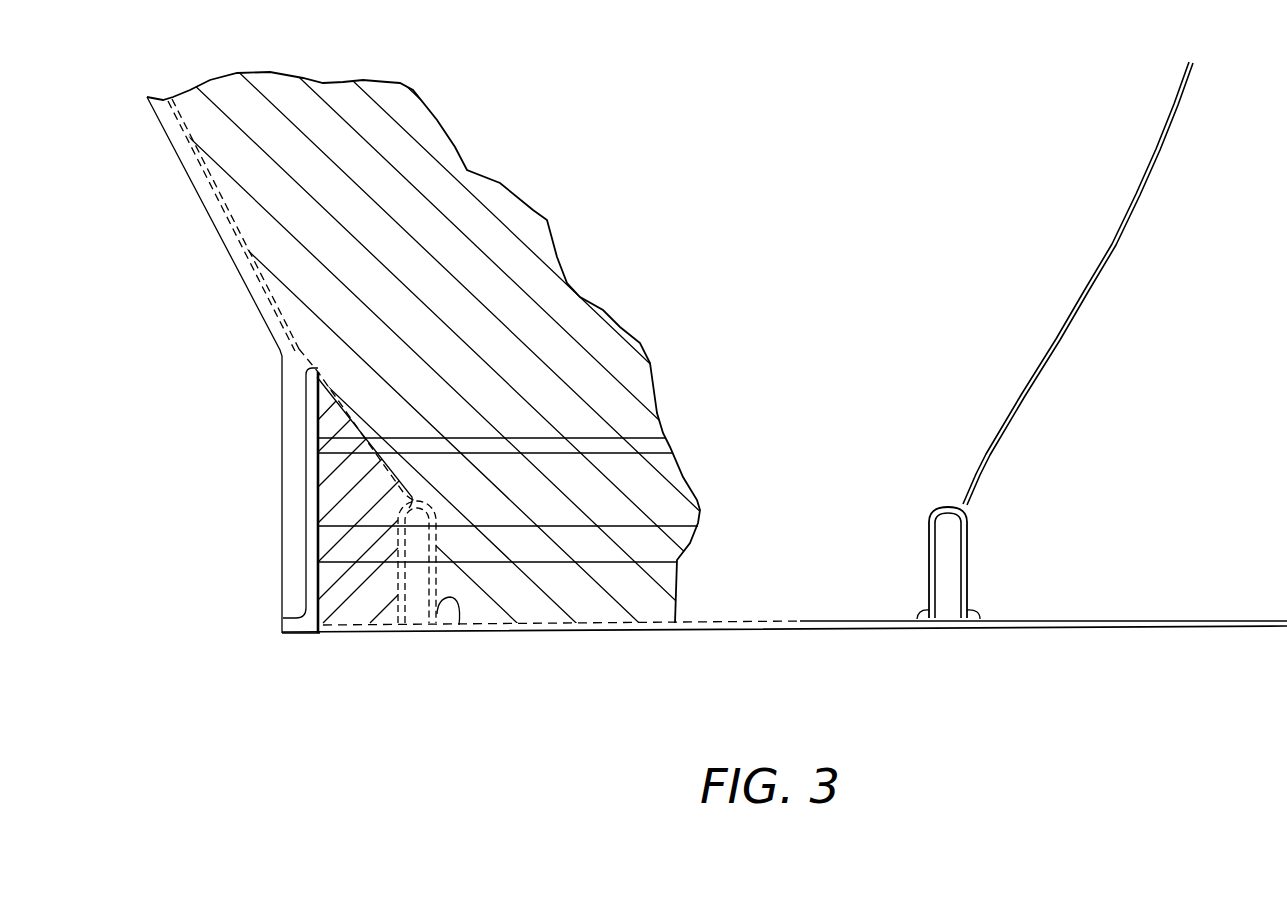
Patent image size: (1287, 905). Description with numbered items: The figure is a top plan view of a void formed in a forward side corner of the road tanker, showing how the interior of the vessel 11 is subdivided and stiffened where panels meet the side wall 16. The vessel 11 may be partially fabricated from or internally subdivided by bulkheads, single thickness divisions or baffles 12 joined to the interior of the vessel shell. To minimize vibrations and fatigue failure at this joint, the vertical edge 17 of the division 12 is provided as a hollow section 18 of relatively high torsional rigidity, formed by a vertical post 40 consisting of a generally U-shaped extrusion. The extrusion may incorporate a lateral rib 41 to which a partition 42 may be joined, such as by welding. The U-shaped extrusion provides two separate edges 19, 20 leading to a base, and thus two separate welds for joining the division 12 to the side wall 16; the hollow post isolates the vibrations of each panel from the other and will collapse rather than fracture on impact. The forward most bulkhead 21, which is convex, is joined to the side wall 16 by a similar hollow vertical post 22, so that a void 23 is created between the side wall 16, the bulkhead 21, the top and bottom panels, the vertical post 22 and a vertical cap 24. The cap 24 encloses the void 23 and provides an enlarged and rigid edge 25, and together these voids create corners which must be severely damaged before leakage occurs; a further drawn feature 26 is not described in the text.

The vessel 11 is at (790, 212).
The division 12 is at (1137, 243).
The side wall 16 is at (1093, 627).
The vertical edge 17 is at (968, 593).
The hollow section 18 is at (947, 545).
The edge 19 is at (910, 627).
The edge 20 is at (977, 627).
The forward most bulkhead 21 is at (254, 288).
The hollow vertical post 22 is at (458, 612).
The void 23 is at (352, 513).
The vertical cap 24 is at (310, 625).
The rigid edge 25 is at (283, 633).
The channel 26 is at (303, 390).
The vertical post 40 is at (917, 510).
The lateral rib 41 is at (955, 487).
The partition 42 is at (997, 438).